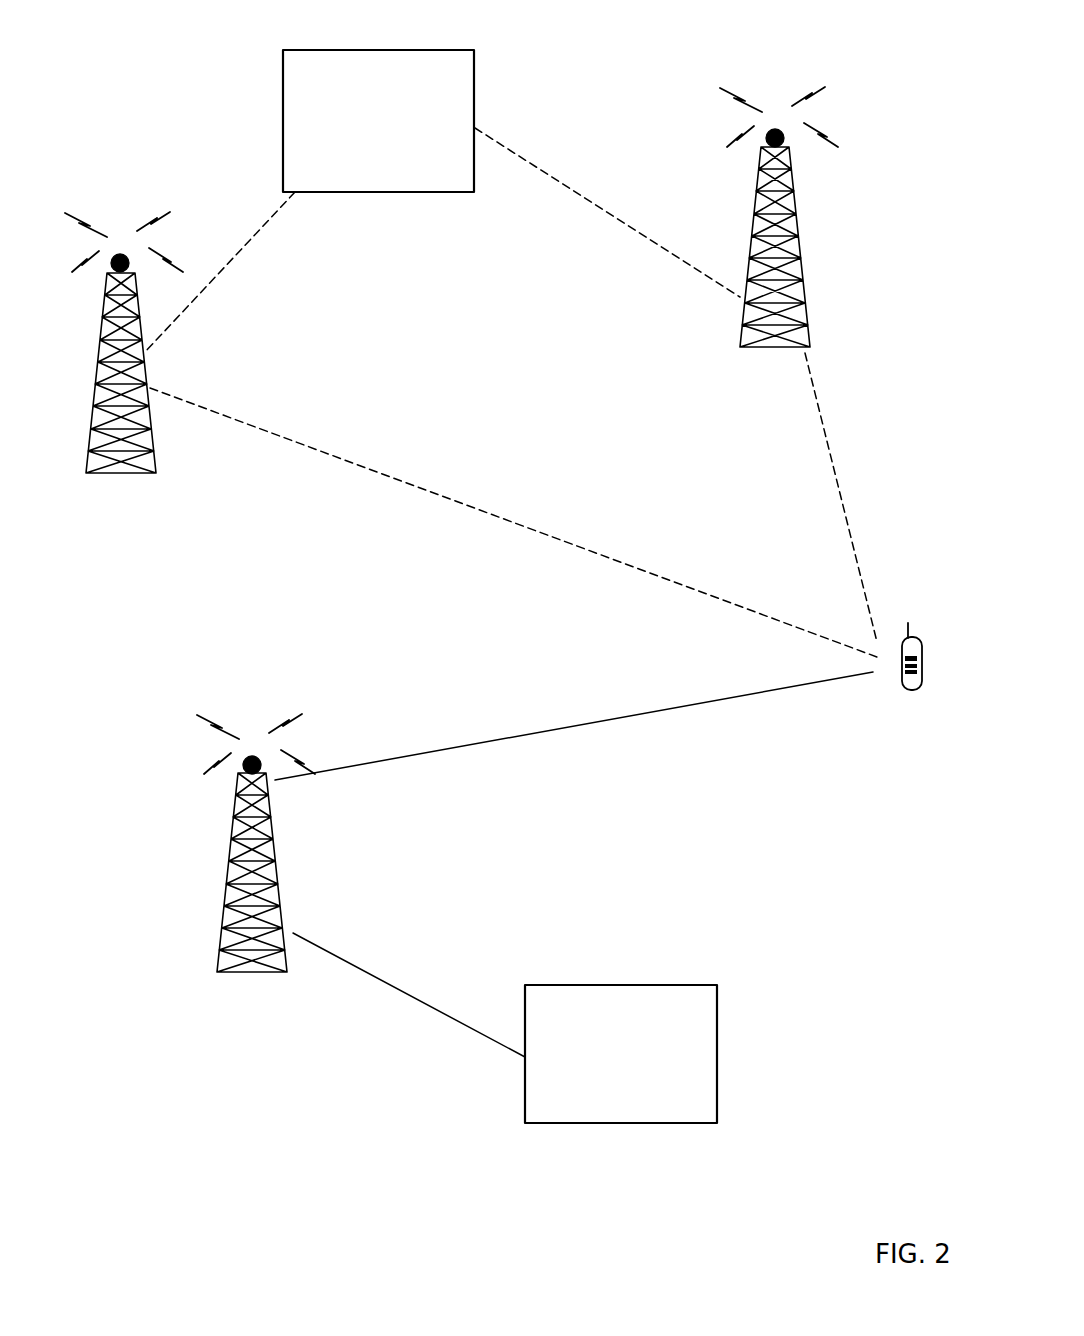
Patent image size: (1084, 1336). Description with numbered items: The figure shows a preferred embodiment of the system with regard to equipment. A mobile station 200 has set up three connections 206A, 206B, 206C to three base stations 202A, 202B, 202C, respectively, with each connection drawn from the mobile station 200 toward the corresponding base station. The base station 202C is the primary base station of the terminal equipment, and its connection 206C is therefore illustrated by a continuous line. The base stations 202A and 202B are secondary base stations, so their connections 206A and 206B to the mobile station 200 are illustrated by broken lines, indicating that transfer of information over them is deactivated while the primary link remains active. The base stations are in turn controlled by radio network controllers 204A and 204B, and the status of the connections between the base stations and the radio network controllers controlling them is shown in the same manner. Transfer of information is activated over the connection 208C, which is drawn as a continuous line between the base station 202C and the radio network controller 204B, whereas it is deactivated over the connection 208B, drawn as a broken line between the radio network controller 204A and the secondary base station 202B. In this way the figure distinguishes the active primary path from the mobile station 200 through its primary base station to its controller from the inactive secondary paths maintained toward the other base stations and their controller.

The mobile station 200 is at (913, 690).
The base station 202A is at (790, 347).
The base station 202B is at (137, 473).
The base station 202C is at (270, 972).
The radio network controller 204A is at (475, 58).
The radio network controller 204B is at (612, 985).
The connection 206A is at (852, 532).
The connection 206B is at (760, 615).
The connection 206C is at (517, 738).
The connection 208B is at (225, 272).
The connection 208C is at (582, 200).